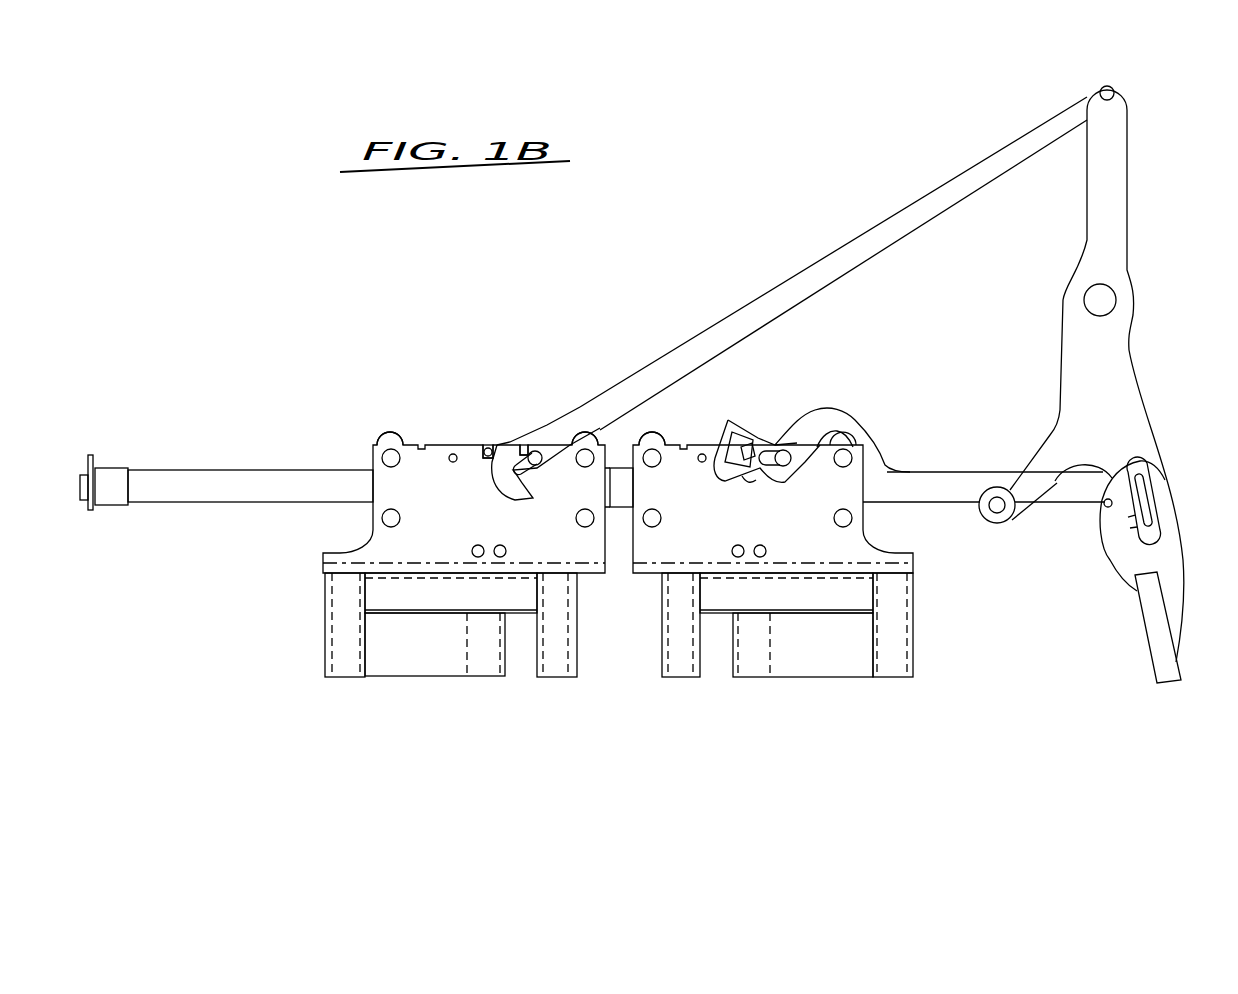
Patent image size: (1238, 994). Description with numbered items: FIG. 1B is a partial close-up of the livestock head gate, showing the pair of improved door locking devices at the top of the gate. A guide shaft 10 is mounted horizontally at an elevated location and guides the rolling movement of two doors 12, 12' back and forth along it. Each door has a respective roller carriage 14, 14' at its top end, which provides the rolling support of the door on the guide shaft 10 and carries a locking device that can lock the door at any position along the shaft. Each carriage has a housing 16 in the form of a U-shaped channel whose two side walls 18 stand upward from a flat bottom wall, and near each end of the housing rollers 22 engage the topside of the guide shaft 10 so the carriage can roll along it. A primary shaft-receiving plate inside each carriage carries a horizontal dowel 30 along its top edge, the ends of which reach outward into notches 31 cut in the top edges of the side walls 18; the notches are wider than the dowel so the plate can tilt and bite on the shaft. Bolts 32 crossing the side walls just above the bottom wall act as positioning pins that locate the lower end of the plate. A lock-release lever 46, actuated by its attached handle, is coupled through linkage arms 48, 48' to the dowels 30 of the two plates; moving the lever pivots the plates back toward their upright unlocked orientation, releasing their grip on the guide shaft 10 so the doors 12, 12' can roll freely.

The guide shaft 10 is at (168, 483).
The door 12 is at (820, 625).
The door 12' is at (408, 659).
The roller carriage 14 is at (758, 425).
The roller carriage 14' is at (526, 430).
The housing 16 is at (364, 506).
The side walls 18 is at (422, 473).
The rollers 22 is at (390, 432).
The dowel 30 is at (488, 447).
The notches 31 is at (512, 450).
The bolts 32 is at (500, 557).
The lock-release lever 46 is at (1113, 188).
The linkage arm 48 is at (940, 429).
The linkage arm 48' is at (833, 263).